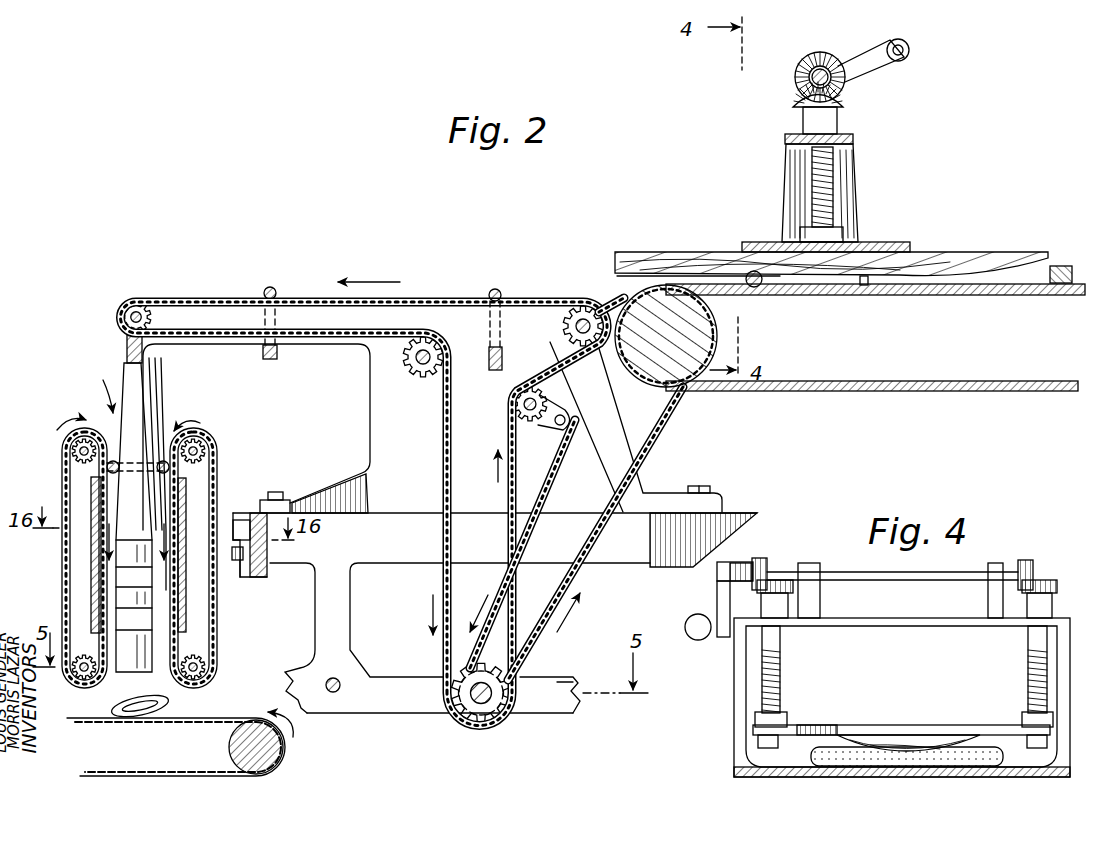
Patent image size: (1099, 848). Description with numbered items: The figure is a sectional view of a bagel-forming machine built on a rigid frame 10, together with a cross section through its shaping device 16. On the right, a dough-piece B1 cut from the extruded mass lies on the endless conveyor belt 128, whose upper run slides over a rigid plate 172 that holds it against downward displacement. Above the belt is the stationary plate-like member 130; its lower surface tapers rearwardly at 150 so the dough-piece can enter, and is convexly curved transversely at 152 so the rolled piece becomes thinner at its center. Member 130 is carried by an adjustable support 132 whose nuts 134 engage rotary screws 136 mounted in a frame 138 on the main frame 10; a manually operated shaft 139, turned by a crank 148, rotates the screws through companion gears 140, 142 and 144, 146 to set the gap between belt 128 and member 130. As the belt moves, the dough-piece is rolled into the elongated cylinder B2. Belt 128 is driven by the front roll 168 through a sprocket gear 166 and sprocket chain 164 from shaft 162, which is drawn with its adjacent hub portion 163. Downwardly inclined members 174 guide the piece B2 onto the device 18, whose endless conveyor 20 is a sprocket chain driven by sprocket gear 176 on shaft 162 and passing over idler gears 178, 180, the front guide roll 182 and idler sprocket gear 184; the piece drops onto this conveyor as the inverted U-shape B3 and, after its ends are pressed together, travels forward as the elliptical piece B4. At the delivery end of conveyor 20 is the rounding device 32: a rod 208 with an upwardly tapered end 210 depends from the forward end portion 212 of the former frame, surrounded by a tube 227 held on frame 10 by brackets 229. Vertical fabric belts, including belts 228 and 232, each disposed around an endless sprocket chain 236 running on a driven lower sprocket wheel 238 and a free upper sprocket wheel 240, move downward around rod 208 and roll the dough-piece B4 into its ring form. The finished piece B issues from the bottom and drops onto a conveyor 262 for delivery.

In FIG. 2, the frame 10 is at (313, 545).
In FIG. 2, the shaping device 16 is at (826, 128).
In FIG. 2, the device 18 is at (438, 284).
In FIG. 2, the endless conveyor 20 is at (556, 300).
In FIG. 2, the rounding device 32 is at (118, 465).
In FIG. 2, the endless conveyor belt 128 is at (971, 380).
In FIG. 4, the endless conveyor belt 128 is at (800, 772).
In FIG. 2, the stationary plate-like member 130 is at (948, 250).
In FIG. 4, the stationary plate-like member 130 is at (908, 740).
In FIG. 2, the adjustable support 132 is at (890, 245).
In FIG. 4, the adjustable support 132 is at (827, 724).
In FIG. 2, the nuts 134 is at (846, 237).
In FIG. 4, the nuts 134 is at (781, 715).
In FIG. 2, the rotary screws 136 is at (833, 170).
In FIG. 4, the rotary screws 136 is at (783, 653).
In FIG. 2, the frame 138 is at (783, 207).
In FIG. 4, the frame 138 is at (737, 705).
In FIG. 2, the manually operated shaft 139 is at (800, 87).
In FIG. 4, the manually operated shaft 139 is at (876, 582).
In FIG. 2, the gear 140 is at (812, 55).
In FIG. 4, the gear 140 is at (762, 560).
In FIG. 2, the gear 142 is at (845, 98).
In FIG. 4, the gear 142 is at (782, 580).
In FIG. 4, the gear 144 is at (1027, 560).
In FIG. 4, the gear 146 is at (1045, 580).
In FIG. 2, the crank 148 is at (870, 52).
In FIG. 4, the crank 148 is at (717, 600).
In FIG. 2, the tapered lower surface 150 is at (1015, 257).
In FIG. 4, the convexly curved surface 152 is at (905, 772).
In FIG. 2, the shaft 162 is at (487, 712).
In FIG. 2, the sprocket hub 163 is at (505, 722).
In FIG. 2, the sprocket chain 164 is at (550, 633).
In FIG. 2, the sprocket gear 166 is at (703, 367).
In FIG. 2, the front roll 168 is at (645, 380).
In FIG. 2, the rigid plate 172 is at (853, 298).
In FIG. 4, the rigid plate 172 is at (990, 772).
In FIG. 2, the downwardly inclined members 174 is at (608, 305).
In FIG. 2, the sprocket gear 176 is at (498, 640).
In FIG. 2, the idler gear 178 is at (533, 422).
In FIG. 2, the idler gear 180 is at (556, 328).
In FIG. 2, the front guide roll 182 is at (147, 293).
In FIG. 2, the idler sprocket gear 184 is at (428, 378).
In FIG. 2, the rod 208 is at (137, 590).
In FIG. 2, the tapered upper end 210 is at (153, 422).
In FIG. 2, the forward end portion 212 is at (127, 352).
In FIG. 2, the tube 227 is at (192, 483).
In FIG. 2, the endless belt 228 is at (215, 486).
In FIG. 2, the brackets 229 is at (232, 518).
In FIG. 2, the endless belt 232 is at (55, 491).
In FIG. 2, the endless sprocket chain 236 is at (63, 513).
In FIG. 2, the lower sprocket wheel 238 is at (80, 680).
In FIG. 2, the upper sprocket wheel 240 is at (60, 438).
In FIG. 2, the conveyor 262 is at (160, 724).
In FIG. 2, the completely formed dough-piece B is at (170, 702).
In FIG. 2, the dough-piece B1 is at (1072, 262).
In FIG. 2, the cylindrical dough-piece B2 is at (732, 252).
In FIG. 4, the cylindrical dough-piece B2 is at (852, 770).
In FIG. 2, the inverted U-shaped dough-piece B3 is at (499, 290).
In FIG. 2, the elliptically shaped dough-piece B4 is at (166, 460).